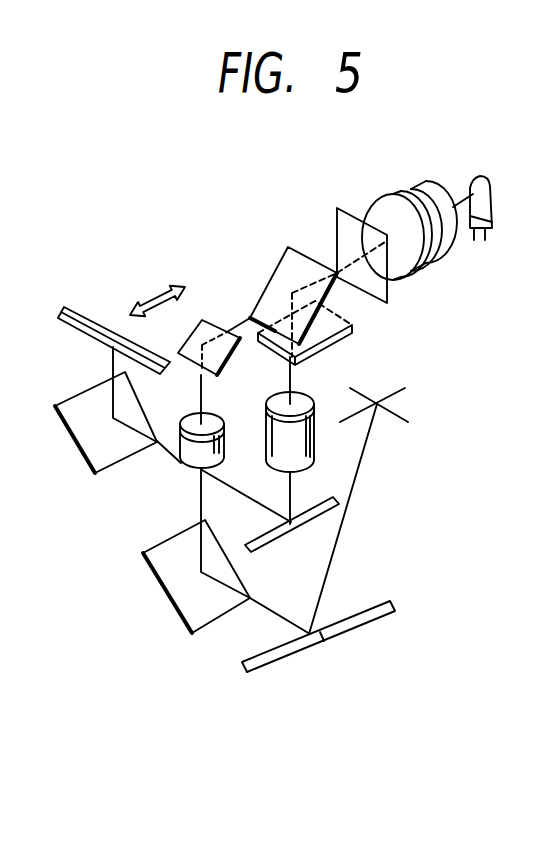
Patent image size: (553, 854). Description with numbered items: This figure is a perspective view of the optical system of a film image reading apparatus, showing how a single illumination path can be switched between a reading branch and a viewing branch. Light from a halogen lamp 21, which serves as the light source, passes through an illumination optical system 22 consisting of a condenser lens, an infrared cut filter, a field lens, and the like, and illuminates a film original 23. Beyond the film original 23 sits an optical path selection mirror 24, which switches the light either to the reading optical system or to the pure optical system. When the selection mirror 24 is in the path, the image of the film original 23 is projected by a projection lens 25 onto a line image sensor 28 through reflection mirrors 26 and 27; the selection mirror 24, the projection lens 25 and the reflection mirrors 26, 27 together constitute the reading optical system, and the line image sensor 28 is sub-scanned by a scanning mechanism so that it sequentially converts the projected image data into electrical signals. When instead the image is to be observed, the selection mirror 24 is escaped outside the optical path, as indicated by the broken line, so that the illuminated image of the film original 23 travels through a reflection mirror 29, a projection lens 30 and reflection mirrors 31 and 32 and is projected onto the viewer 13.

The viewer 13 is at (398, 405).
The halogen lamp 21 is at (490, 177).
The illumination optical system 22 is at (422, 162).
The film original 23 is at (337, 228).
The optical path selection mirror 24 is at (283, 250).
The projection lens 25 is at (309, 395).
The reflection mirror 26 is at (316, 516).
The reflection mirror 27 is at (84, 452).
The line image sensor 28 is at (80, 306).
The reflection mirror 29 is at (206, 318).
The projection lens 30 is at (185, 460).
The reflection mirror 31 is at (178, 610).
The reflection mirror 32 is at (366, 622).